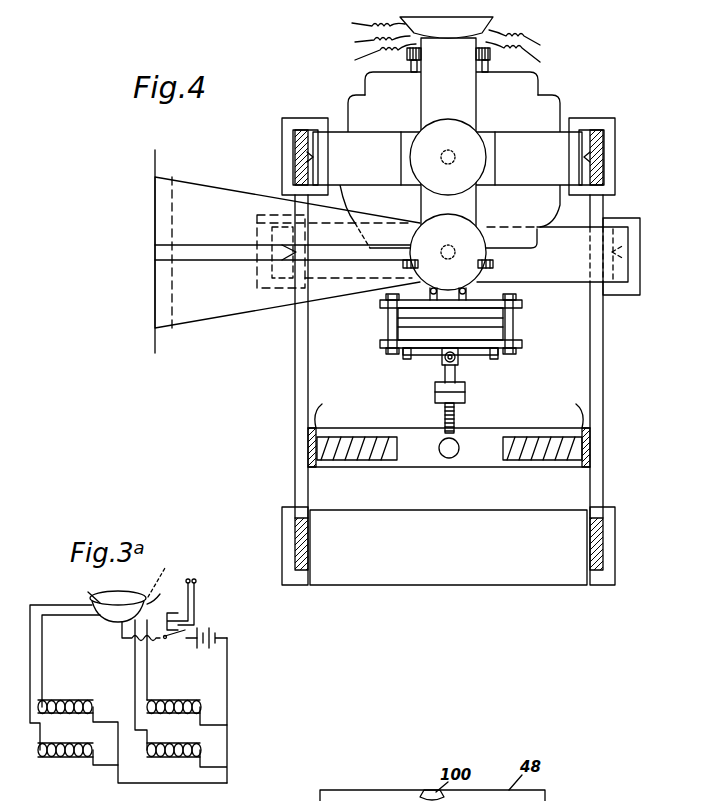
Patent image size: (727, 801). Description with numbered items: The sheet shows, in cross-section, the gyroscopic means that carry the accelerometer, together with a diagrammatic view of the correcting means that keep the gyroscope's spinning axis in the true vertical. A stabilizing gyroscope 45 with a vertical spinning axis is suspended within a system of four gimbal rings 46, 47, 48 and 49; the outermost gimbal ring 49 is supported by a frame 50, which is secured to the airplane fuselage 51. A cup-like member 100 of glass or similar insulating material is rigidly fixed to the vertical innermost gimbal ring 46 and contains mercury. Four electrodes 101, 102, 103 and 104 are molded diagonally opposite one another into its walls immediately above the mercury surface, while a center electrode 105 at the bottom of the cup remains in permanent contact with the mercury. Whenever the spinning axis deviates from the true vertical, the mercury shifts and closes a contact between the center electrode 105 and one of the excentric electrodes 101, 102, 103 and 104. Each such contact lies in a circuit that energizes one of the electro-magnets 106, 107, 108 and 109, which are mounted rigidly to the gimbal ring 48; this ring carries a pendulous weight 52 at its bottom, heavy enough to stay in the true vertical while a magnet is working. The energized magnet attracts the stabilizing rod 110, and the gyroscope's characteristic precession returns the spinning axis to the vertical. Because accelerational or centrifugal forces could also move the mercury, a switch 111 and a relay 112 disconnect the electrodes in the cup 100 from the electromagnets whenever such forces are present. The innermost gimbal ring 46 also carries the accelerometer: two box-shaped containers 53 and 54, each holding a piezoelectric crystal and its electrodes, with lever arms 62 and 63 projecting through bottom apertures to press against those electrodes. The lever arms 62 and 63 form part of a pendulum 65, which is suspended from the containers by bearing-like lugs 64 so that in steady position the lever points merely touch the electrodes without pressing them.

In FIG. 4, the stabilizing gyroscope 45 is at (546, 116).
In FIG. 4, the innermost gimbal ring 46 is at (468, 67).
In FIG. 4, the gimbal ring 47 is at (340, 147).
In FIG. 4, the gimbal ring 48 is at (596, 354).
In FIG. 4, the outermost gimbal ring 49 is at (640, 241).
In FIG. 4, the frame 50 is at (222, 192).
In FIG. 4, the airplane fuselage 51 is at (155, 208).
In FIG. 4, the pendulous weight 52 is at (412, 575).
In FIG. 4, the box-shaped container 53 is at (398, 323).
In FIG. 4, the box-shaped container 54 is at (502, 324).
In FIG. 4, the lever arm 62 is at (406, 357).
In FIG. 4, the lever arm 63 is at (498, 352).
In FIG. 4, the bearing-like lugs 64 is at (457, 361).
In FIG. 4, the pendulum 65 is at (466, 397).
In FIG. 4, the cup-like member 100 is at (497, 21).
In FIG. 3A, the cup-like member 100 is at (133, 591).
In FIG. 4, the electrode 101 is at (363, 25).
In FIG. 3A, the electrode 101 is at (78, 592).
In FIG. 4, the electrode 102 is at (364, 43).
In FIG. 3A, the electrode 102 is at (108, 620).
In FIG. 4, the electrode 103 is at (532, 43).
In FIG. 3A, the electrode 103 is at (168, 595).
In FIG. 4, the electrode 104 is at (530, 58).
In FIG. 3A, the electrode 104 is at (171, 576).
In FIG. 4, the center electrode 105 is at (366, 57).
In FIG. 3A, the center electrode 105 is at (122, 626).
In FIG. 3A, the electro-magnet 106 is at (132, 731).
In FIG. 4, the electro-magnet 107 is at (377, 442).
In FIG. 3A, the electro-magnet 107 is at (68, 753).
In FIG. 4, the electro-magnet 108 is at (460, 444).
In FIG. 3A, the electro-magnet 108 is at (203, 690).
In FIG. 4, the electro-magnet 109 is at (557, 442).
In FIG. 3A, the electro-magnet 109 is at (205, 750).
In FIG. 4, the stabilizing rod 110 is at (445, 418).
In FIG. 3A, the switch 111 is at (168, 642).
In FIG. 3A, the relay 112 is at (200, 621).